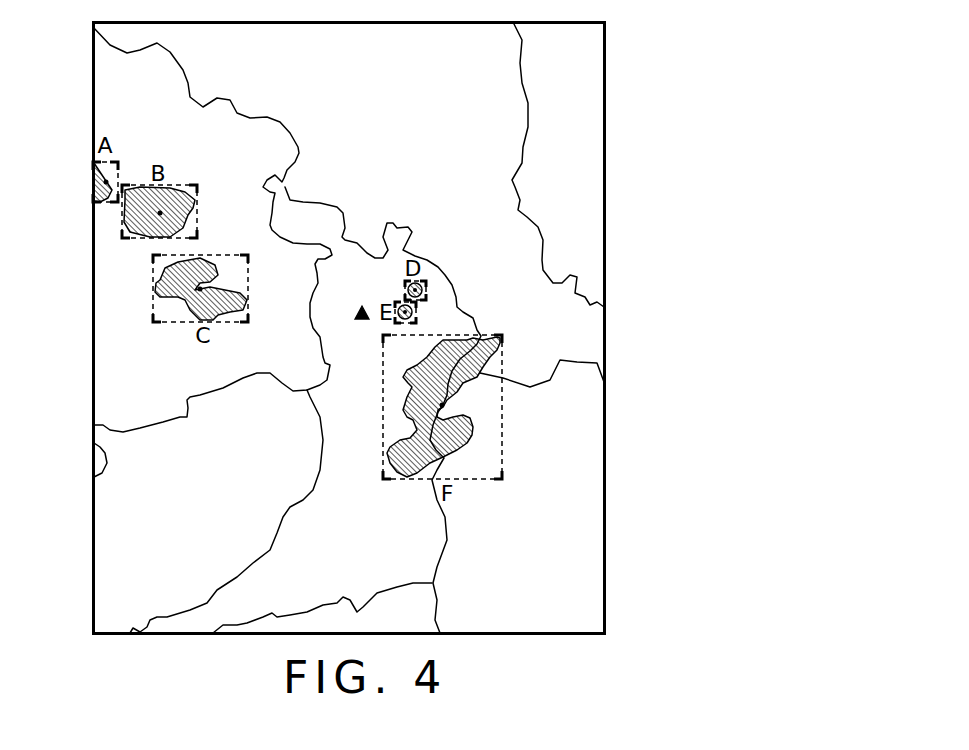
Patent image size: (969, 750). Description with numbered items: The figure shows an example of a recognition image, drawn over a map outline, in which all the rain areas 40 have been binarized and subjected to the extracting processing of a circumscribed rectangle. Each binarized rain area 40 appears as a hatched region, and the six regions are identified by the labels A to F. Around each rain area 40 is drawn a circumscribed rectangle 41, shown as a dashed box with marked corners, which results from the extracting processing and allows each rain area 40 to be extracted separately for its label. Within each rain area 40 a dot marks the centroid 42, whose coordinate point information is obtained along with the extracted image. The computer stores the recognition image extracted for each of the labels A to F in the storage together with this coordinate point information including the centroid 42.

The rain area 40 is at (341, 312).
The circumscribed rectangle 41 is at (341, 302).
The centroid 42 is at (341, 320).